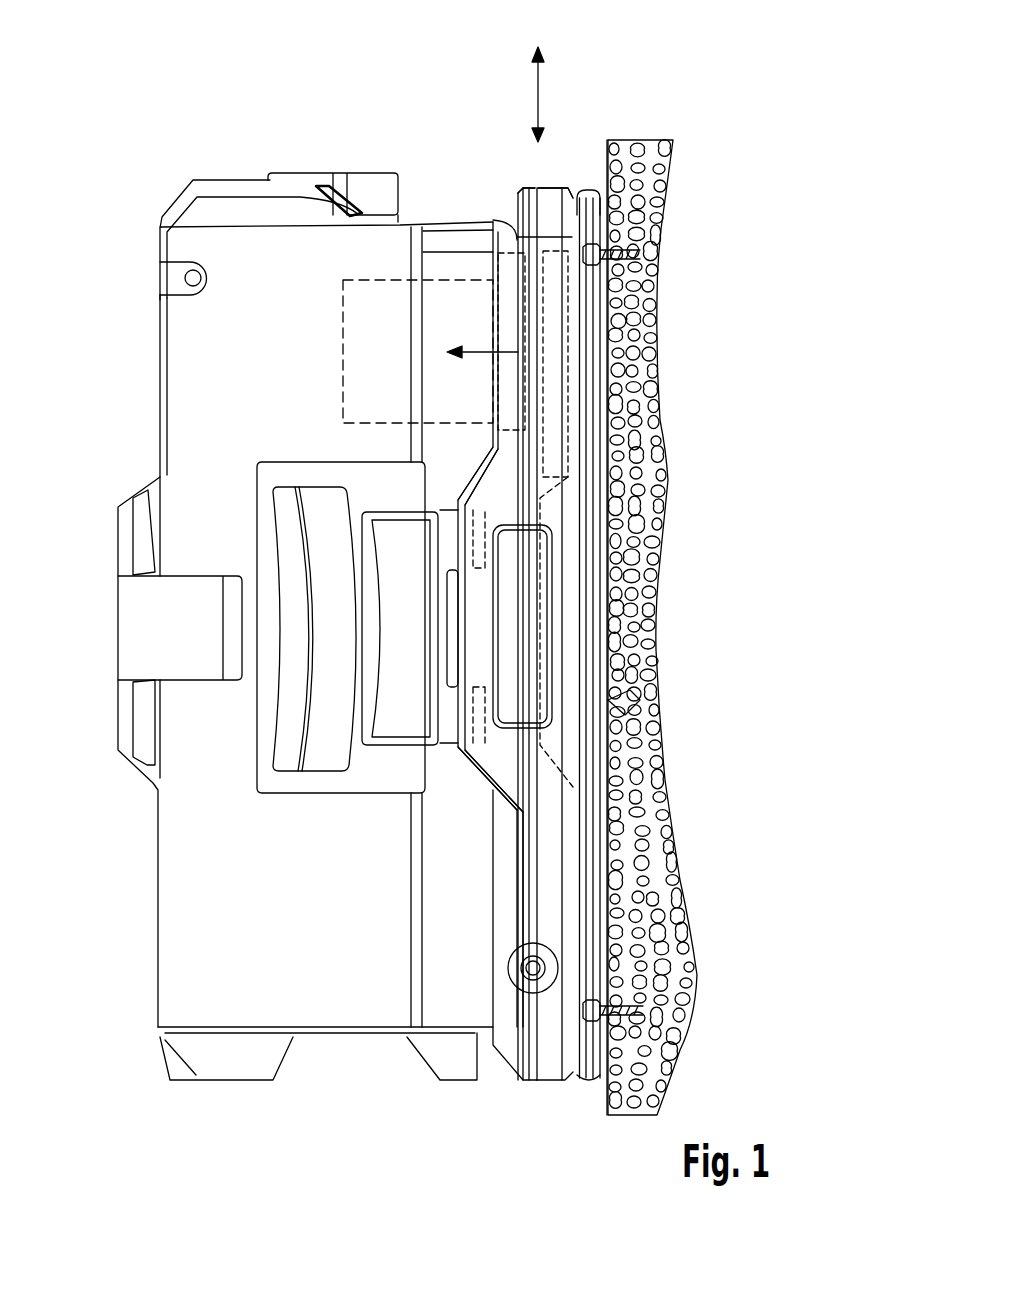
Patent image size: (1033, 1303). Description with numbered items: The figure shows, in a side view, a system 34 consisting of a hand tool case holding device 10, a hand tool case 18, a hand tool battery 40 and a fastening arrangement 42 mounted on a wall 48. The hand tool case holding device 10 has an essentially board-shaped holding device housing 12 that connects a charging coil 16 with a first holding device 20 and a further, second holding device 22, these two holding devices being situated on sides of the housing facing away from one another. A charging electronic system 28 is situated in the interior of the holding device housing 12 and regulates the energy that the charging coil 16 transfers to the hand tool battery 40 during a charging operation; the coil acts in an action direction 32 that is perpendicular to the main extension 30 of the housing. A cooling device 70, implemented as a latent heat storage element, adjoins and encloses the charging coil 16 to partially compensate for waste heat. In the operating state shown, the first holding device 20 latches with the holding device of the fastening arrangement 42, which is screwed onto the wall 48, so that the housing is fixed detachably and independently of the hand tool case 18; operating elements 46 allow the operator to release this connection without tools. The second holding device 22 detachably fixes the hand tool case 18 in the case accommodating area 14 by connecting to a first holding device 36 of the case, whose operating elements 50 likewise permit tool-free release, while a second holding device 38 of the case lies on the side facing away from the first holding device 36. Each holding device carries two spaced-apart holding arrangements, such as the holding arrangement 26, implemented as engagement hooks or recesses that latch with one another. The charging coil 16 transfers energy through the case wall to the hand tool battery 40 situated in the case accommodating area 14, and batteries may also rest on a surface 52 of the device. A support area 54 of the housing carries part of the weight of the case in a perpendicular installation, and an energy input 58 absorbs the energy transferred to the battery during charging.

The hand tool case holding device 10 is at (562, 162).
The holding device housing 12 is at (557, 197).
The case accommodating area 14 is at (305, 152).
The charging coil 16 is at (560, 332).
The hand tool case 18 is at (198, 162).
The first holding device 20 is at (585, 622).
The second holding device 22 is at (473, 775).
The holding arrangement 26 is at (478, 476).
The charging electronic system 28 is at (560, 390).
The main extension 30 is at (538, 93).
The action direction 32 is at (463, 290).
The system 34 is at (635, 85).
The first holding device of hand tool case 36 is at (458, 484).
The second holding device of hand tool case 38 is at (120, 483).
The hand tool battery 40 is at (432, 292).
The fastening arrangement 42 is at (588, 582).
The operating element 46 is at (522, 675).
The wall 48 is at (632, 737).
The operating element of hand tool case 50 is at (393, 723).
The surface 52 is at (487, 254).
The support area 54 is at (502, 1078).
The energy input 58 is at (537, 977).
The cooling device 70 is at (513, 217).